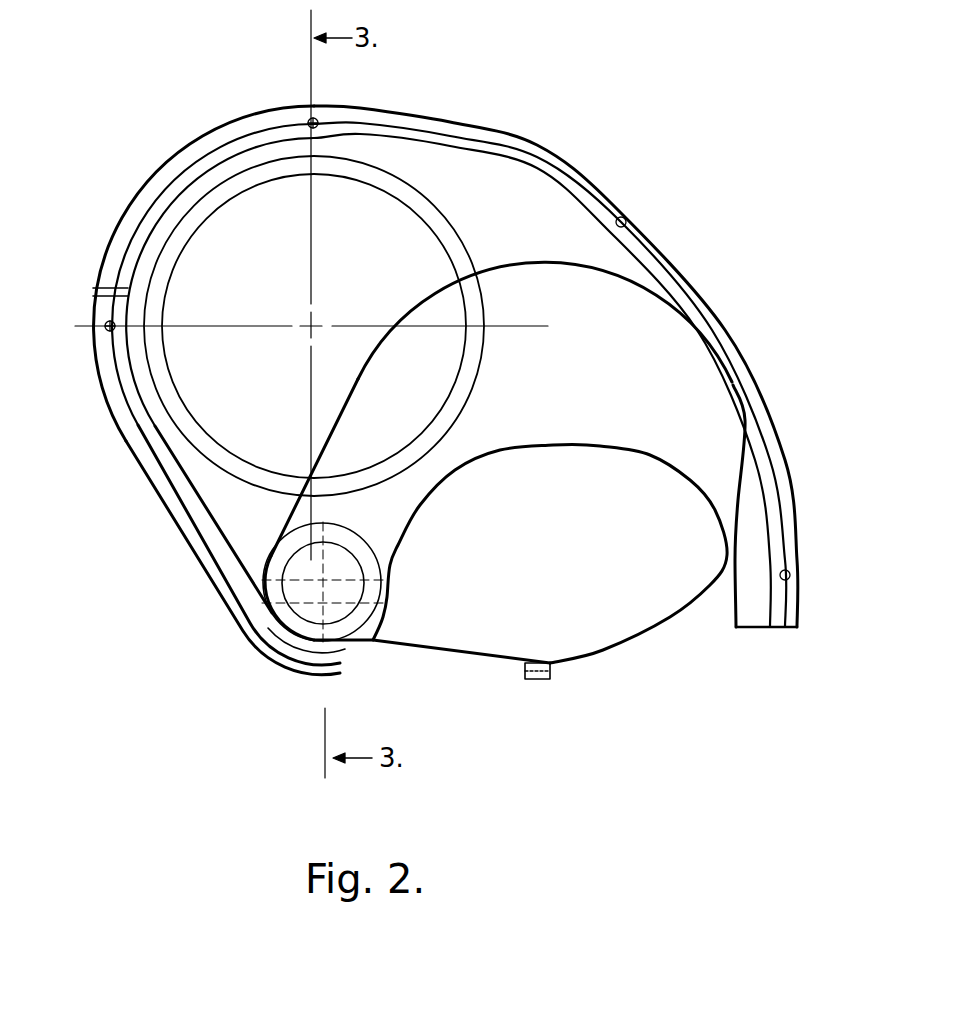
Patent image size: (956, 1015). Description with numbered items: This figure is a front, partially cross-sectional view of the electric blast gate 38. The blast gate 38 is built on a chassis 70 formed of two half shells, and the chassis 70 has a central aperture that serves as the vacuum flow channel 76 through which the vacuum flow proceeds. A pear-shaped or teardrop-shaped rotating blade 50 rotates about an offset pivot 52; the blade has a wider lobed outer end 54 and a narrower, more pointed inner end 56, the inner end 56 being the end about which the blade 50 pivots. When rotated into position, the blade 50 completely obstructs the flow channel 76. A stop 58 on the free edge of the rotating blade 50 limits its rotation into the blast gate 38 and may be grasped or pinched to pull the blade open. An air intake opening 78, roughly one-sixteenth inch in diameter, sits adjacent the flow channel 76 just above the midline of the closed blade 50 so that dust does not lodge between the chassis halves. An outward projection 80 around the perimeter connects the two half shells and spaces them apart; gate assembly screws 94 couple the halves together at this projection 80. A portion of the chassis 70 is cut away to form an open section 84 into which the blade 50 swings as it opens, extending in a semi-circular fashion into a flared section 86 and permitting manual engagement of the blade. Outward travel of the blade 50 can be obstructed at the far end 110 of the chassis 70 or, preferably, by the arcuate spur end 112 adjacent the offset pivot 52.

The blast gate 38 is at (481, 94).
The rotating blade 50 is at (596, 643).
The offset pivot 52 is at (307, 630).
The lobed outer end 54 is at (722, 382).
The pointed inner end 56 is at (300, 513).
The stop 58 is at (525, 676).
The chassis 70 is at (508, 172).
The central aperture (vacuum flow channel) 76 is at (258, 195).
The air intake opening 78 is at (96, 291).
The outward projection 80 is at (718, 320).
The open section 84 is at (715, 600).
The flared section 86 is at (758, 537).
The gate assembly screws 94 is at (320, 121).
The far end 110 is at (772, 628).
The arcuate spur end 112 is at (338, 672).